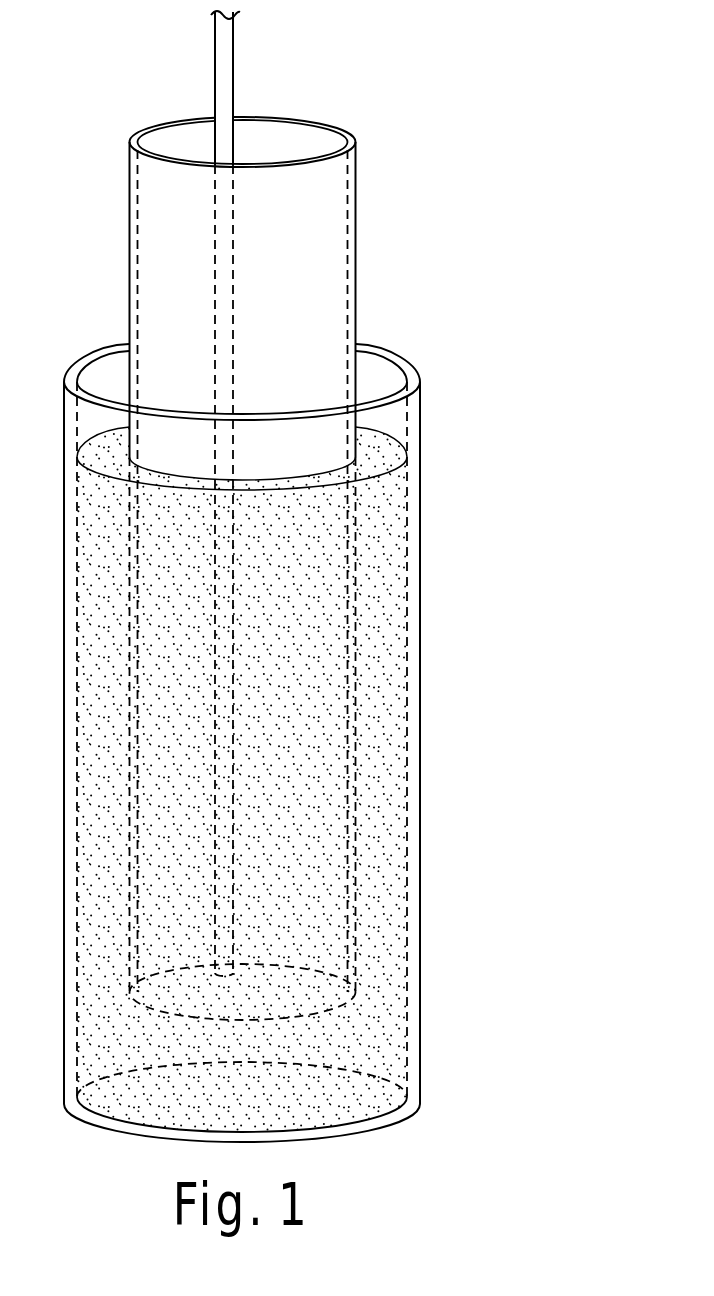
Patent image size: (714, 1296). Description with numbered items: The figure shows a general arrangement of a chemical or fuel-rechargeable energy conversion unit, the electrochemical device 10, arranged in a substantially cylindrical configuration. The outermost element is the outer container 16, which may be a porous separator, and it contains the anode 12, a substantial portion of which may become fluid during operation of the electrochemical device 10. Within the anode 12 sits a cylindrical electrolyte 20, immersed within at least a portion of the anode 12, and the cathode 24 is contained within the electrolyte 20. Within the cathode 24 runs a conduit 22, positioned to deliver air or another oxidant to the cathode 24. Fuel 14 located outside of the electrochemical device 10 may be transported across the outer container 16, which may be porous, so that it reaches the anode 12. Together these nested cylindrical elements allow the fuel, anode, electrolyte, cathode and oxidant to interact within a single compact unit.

The electrochemical device 10 is at (400, 66).
The anode 12 is at (392, 578).
The fuel 14 is at (510, 674).
The outer container 16 is at (420, 820).
The electrolyte 20 is at (356, 208).
The conduit 22 is at (233, 70).
The cathode 24 is at (335, 323).